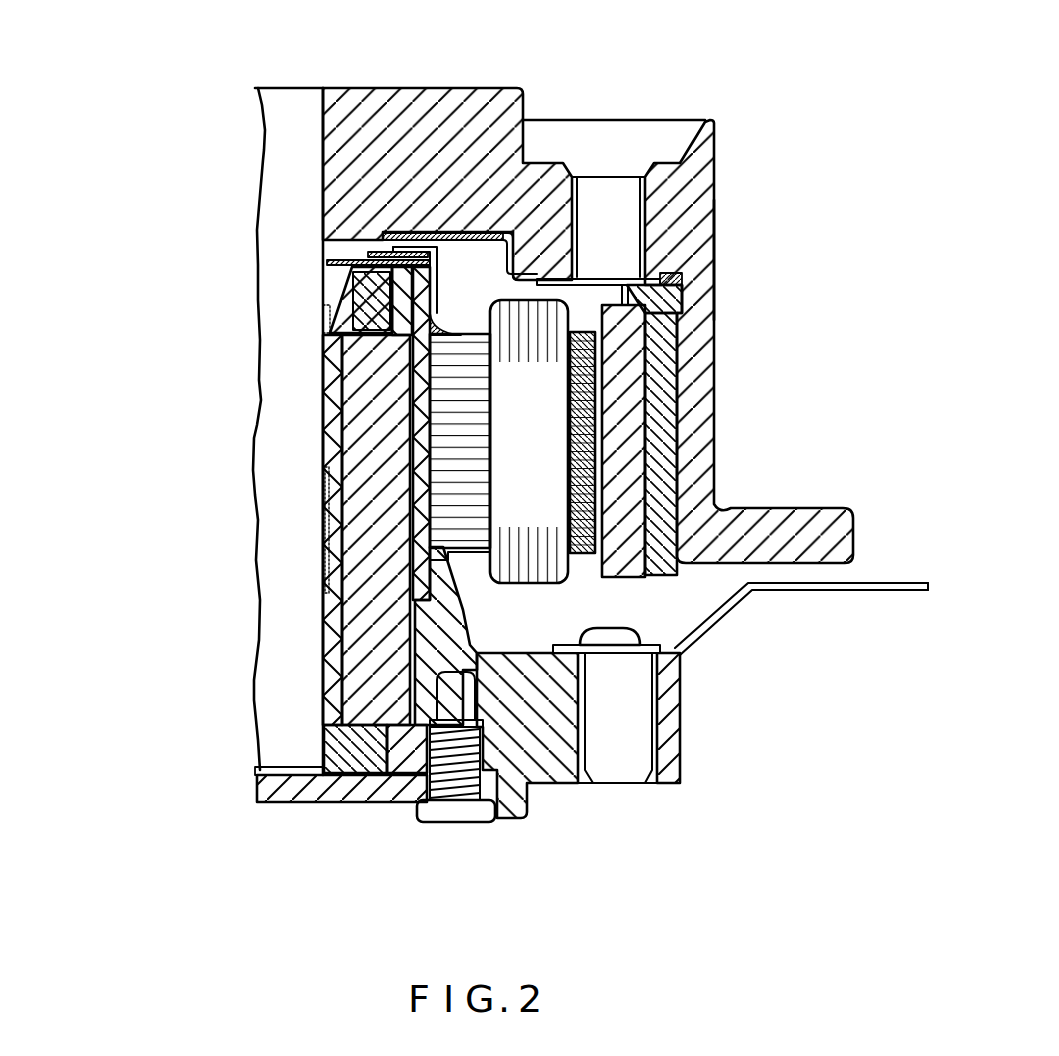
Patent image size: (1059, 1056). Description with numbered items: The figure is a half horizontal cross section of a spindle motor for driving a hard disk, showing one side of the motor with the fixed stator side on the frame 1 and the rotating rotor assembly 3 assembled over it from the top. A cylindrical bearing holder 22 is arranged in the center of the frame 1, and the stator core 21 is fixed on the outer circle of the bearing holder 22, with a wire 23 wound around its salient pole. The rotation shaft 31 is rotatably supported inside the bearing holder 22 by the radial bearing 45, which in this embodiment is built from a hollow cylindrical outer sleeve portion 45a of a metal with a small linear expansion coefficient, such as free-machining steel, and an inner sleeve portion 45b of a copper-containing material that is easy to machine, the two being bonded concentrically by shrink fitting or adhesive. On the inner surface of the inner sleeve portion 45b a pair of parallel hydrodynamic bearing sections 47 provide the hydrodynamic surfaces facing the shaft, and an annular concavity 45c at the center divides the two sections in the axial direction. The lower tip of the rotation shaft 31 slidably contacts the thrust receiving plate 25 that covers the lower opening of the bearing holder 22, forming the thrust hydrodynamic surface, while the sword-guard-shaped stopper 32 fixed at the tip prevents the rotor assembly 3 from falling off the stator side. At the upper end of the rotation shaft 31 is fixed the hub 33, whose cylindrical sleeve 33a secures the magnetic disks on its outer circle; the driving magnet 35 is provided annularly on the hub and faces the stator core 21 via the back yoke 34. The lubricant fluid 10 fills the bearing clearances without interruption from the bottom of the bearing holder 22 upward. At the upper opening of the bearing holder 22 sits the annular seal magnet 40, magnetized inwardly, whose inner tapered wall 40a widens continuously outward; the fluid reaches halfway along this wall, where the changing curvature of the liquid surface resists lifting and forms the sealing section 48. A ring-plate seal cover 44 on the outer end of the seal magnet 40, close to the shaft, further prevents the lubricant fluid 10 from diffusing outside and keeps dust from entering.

The frame 1 is at (558, 766).
The rotor assembly 3 is at (722, 137).
The lubricant fluid 10 is at (307, 530).
The stator core 21 is at (600, 423).
The bearing holder 22 is at (435, 618).
The wire 23 is at (540, 580).
The thrust receiving plate 25 is at (297, 790).
The rotation shaft 31 is at (292, 357).
The stopper 32 is at (352, 800).
The hub 33 is at (435, 88).
The sleeve 33a is at (703, 253).
The back yoke 34 is at (663, 483).
The driving magnet 35 is at (625, 370).
The annular seal magnet 40 is at (352, 278).
The tapered wall 40a is at (352, 268).
The seal cover 44 is at (366, 252).
The radial bearing 45 is at (140, 440).
The outer sleeve portion 45a is at (355, 457).
The inner sleeve portion 45b is at (328, 494).
The annular concavity 45c is at (244, 585).
The hydrodynamic bearing section 47 is at (337, 418).
The sealing section 48 is at (332, 322).